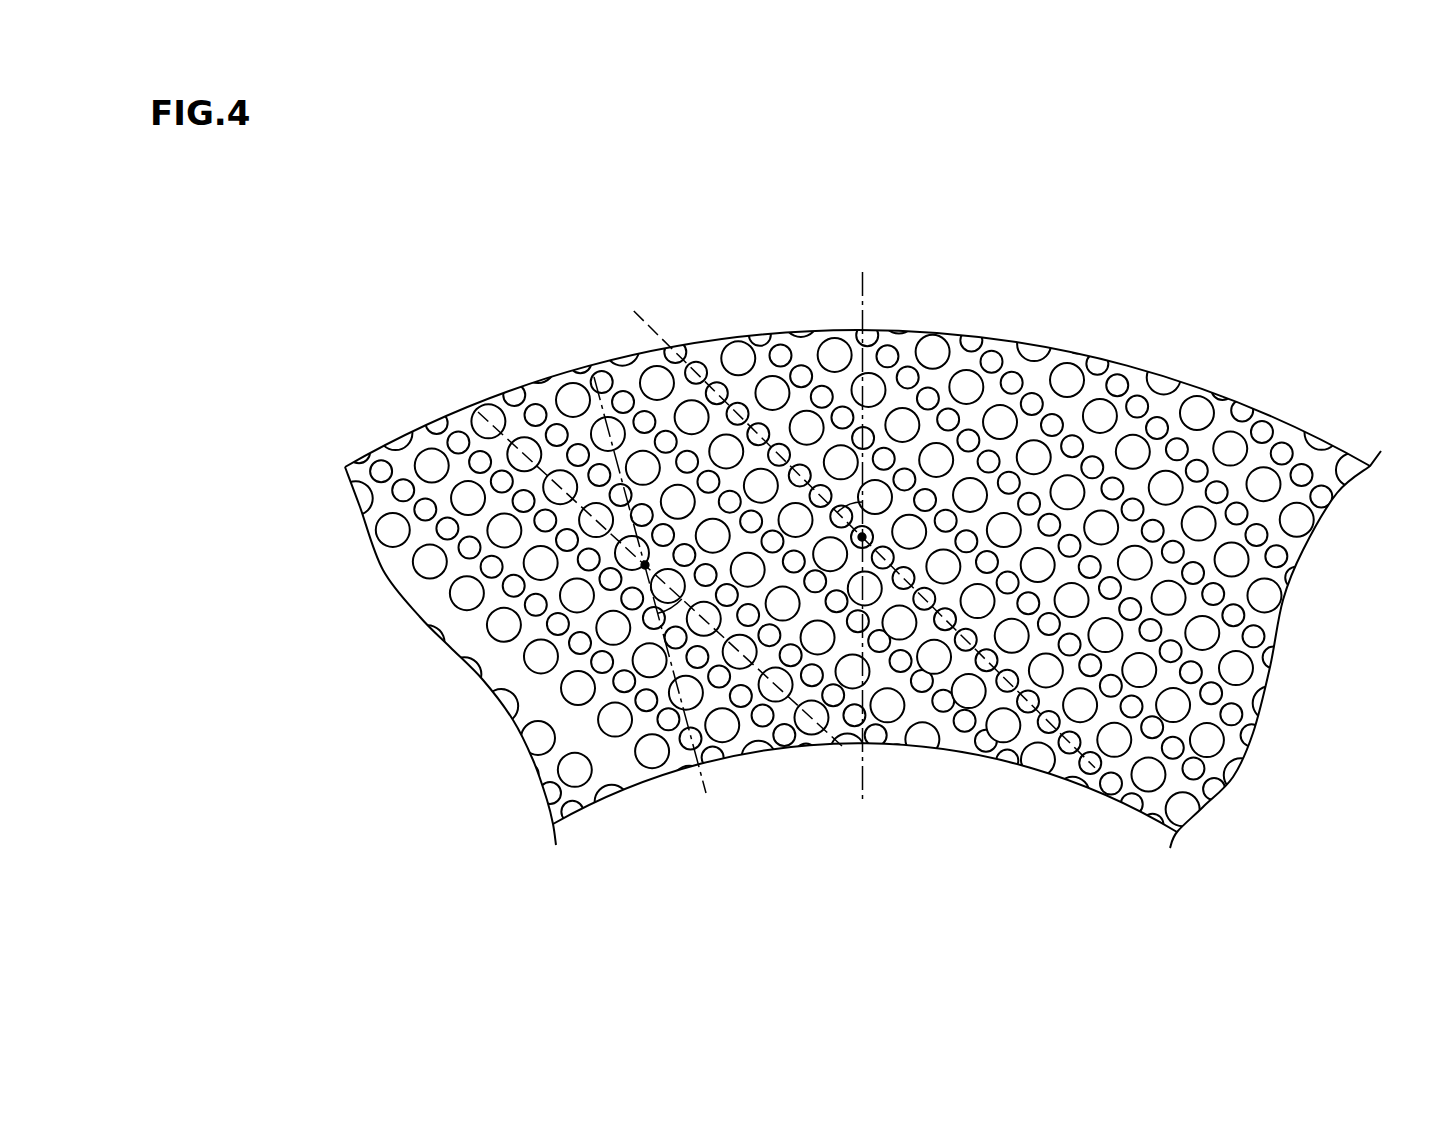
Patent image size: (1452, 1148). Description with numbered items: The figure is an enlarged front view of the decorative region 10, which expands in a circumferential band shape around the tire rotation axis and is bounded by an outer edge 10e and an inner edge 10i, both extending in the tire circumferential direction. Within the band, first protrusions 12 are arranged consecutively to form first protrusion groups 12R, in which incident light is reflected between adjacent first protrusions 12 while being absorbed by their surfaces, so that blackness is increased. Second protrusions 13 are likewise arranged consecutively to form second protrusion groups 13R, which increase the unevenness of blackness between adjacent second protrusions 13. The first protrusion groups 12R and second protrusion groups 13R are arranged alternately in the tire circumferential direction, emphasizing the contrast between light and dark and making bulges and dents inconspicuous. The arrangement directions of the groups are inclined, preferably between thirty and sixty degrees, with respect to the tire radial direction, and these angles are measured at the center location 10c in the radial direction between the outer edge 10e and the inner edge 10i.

The decorative region 10 is at (1331, 683).
The center location 10c is at (862, 536).
The outer edge 10e is at (1168, 378).
The inner edge 10i is at (1022, 775).
The first protrusion 12 is at (620, 770).
The first protrusion group 12R is at (685, 783).
The second protrusion 13 is at (503, 405).
The second protrusion group 13R is at (474, 380).